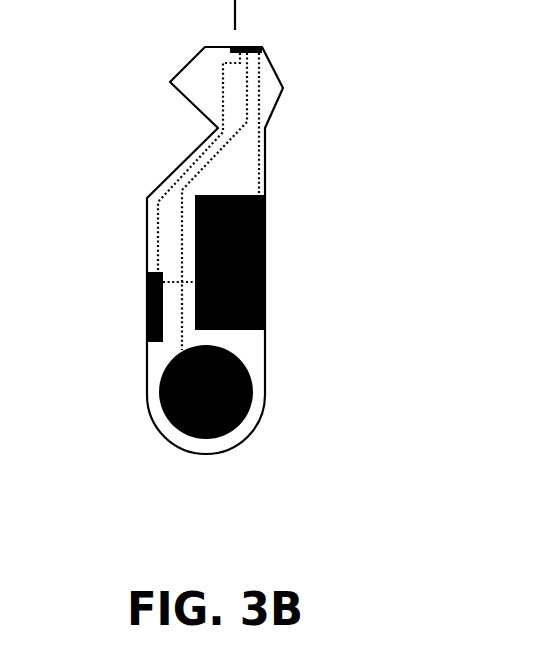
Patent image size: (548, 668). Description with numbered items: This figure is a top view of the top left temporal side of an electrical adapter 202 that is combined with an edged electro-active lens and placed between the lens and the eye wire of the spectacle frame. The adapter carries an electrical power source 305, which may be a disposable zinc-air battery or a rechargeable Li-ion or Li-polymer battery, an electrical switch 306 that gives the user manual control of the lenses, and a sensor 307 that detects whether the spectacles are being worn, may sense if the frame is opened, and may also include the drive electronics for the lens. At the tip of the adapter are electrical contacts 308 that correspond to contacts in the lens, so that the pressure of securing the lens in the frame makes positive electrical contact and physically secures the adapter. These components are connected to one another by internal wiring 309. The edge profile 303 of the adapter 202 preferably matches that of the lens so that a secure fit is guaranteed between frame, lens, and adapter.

The electrical adapter 202 is at (265, 378).
The edge profile 303 is at (193, 107).
The electrical power source 305 is at (233, 430).
The electrical switch 306 is at (145, 315).
The sensor 307 is at (265, 275).
The electrical contacts 308 is at (262, 46).
The internal wiring 309 is at (218, 153).